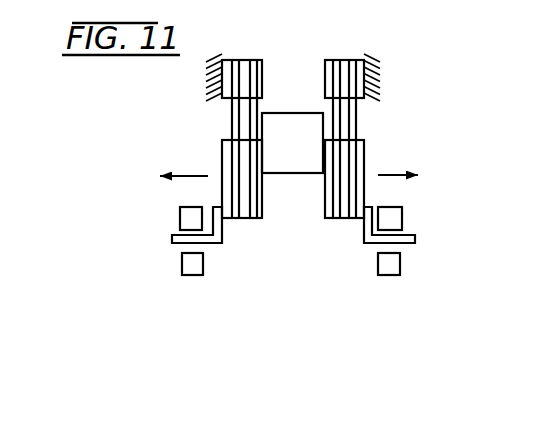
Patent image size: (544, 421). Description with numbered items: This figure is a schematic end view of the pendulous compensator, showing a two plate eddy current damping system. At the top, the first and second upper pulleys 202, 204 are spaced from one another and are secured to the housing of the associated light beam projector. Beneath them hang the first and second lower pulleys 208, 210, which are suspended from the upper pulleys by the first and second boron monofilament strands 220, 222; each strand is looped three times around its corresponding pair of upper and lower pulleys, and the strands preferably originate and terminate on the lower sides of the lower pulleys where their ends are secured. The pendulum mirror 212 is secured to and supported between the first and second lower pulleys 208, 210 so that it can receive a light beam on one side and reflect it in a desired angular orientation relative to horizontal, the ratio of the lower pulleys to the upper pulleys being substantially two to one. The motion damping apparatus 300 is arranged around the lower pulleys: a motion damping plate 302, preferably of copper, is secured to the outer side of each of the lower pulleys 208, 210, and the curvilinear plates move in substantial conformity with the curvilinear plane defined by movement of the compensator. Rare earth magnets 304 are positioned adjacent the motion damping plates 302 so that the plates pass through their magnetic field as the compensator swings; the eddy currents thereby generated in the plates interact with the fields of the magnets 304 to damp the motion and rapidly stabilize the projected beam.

The first upper pulley 202 is at (237, 60).
The second upper pulley 204 is at (335, 60).
The first lower pulley 208 is at (222, 155).
The second lower pulley 210 is at (364, 148).
The pendulum mirror 212 is at (292, 125).
The first boron monofilament strand 220 is at (223, 109).
The second boron monofilament strand 222 is at (357, 118).
The motion damping apparatus 300 is at (350, 242).
The motion damping plate 302 is at (203, 262).
The rare earth magnet 304 is at (180, 215).